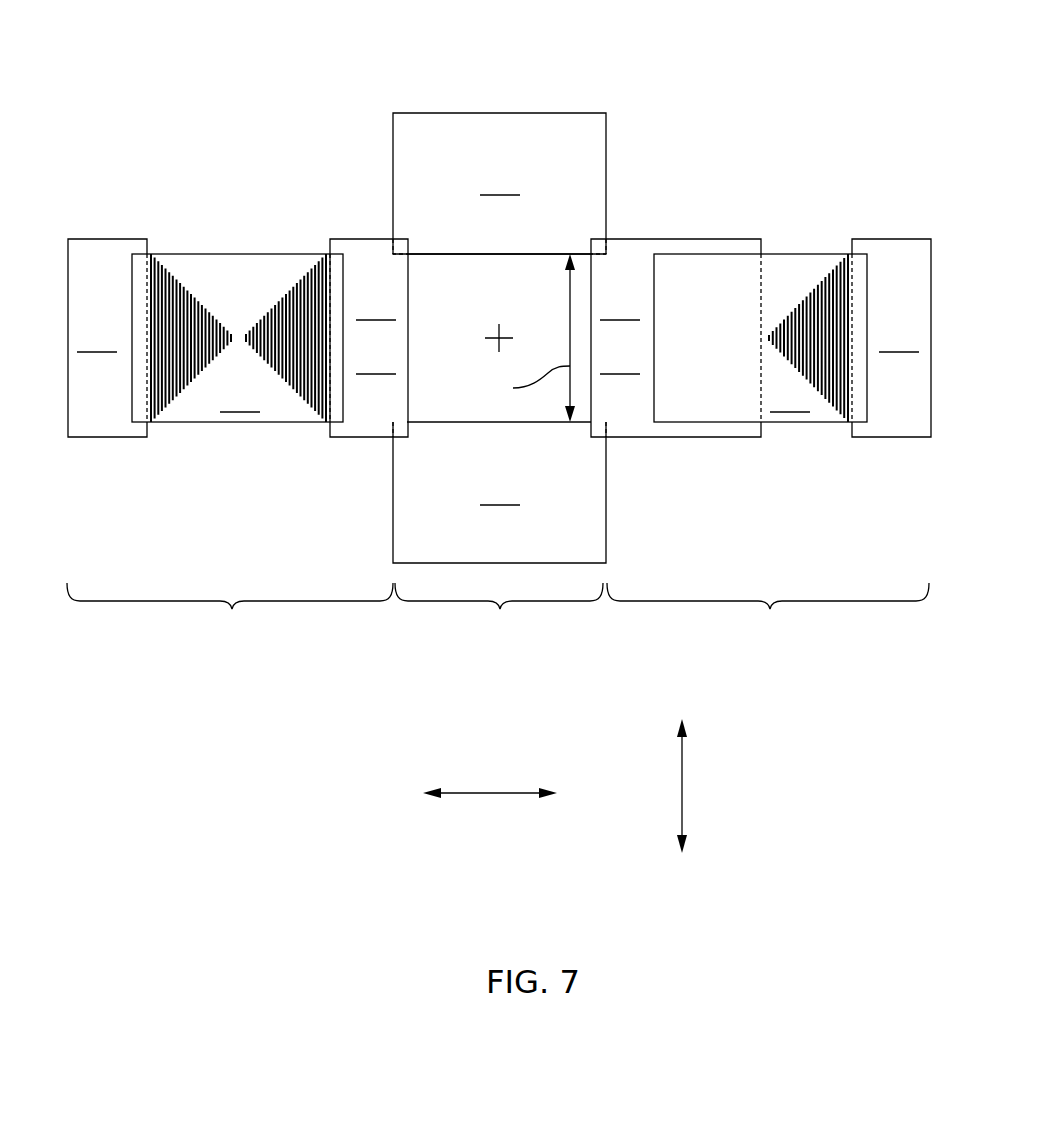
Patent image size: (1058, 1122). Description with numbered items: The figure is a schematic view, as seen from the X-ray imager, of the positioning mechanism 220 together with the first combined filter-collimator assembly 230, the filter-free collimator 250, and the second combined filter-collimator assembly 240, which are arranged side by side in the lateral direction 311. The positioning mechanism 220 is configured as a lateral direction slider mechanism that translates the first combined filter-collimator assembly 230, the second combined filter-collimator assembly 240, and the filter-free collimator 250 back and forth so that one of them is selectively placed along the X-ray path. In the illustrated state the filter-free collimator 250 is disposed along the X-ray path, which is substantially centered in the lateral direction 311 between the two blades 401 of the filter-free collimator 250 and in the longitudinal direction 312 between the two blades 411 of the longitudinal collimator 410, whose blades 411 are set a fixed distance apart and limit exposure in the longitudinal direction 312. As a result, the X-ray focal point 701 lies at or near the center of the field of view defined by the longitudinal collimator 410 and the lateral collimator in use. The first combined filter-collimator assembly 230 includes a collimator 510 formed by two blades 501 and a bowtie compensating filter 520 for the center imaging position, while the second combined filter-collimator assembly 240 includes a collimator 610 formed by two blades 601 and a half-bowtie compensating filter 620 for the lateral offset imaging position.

The positioning mechanism 220 is at (228, 85).
The longitudinal collimator 410 is at (520, 85).
The blades 411 is at (501, 285).
The blades 401 is at (545, 338).
The blades 501 is at (232, 314).
The collimator 510 is at (100, 239).
The compensating filter 520 is at (237, 338).
The blades 601 is at (765, 314).
The collimator 610 is at (655, 239).
The compensating filter 620 is at (760, 338).
The X-ray focal point 701 is at (495, 342).
The first combined filter-collimator assembly 230 is at (232, 609).
The filter-free collimator 250 is at (500, 609).
The second combined filter-collimator assembly 240 is at (770, 609).
The lateral direction 311 is at (490, 793).
The longitudinal direction 312 is at (681, 775).